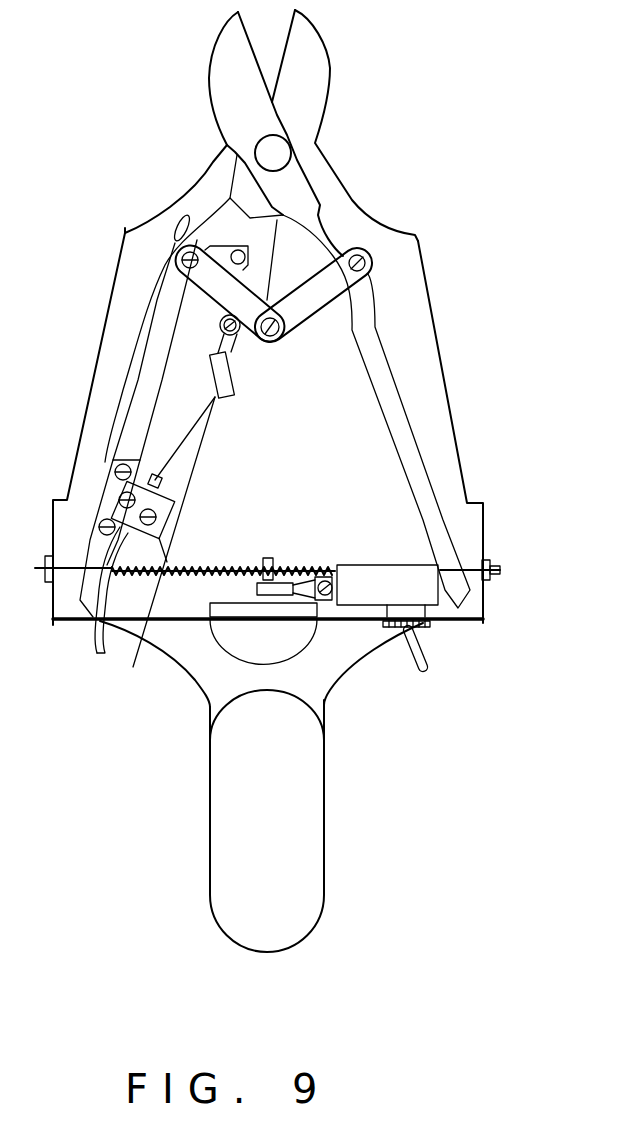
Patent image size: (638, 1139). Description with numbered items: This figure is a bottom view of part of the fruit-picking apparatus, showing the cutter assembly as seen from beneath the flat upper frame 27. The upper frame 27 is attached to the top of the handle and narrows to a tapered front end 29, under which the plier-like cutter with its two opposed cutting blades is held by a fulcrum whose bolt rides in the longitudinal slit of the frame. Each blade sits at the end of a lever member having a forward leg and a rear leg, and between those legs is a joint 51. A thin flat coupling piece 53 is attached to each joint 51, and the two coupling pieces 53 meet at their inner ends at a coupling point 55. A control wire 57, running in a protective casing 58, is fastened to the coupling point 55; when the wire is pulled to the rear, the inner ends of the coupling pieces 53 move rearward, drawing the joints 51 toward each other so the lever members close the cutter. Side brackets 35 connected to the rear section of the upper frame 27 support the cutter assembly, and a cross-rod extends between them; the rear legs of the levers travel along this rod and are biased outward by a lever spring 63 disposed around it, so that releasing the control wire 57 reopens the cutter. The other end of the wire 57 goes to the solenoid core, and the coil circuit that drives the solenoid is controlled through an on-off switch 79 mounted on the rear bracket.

The upper frame 27 is at (437, 387).
The tapered front end 29 is at (352, 200).
The side brackets 35 is at (485, 548).
The joint 51 is at (368, 265).
The coupling piece 53 is at (293, 313).
The coupling point 55 is at (272, 340).
The control wire 57 is at (188, 437).
The protective casing 58 is at (93, 652).
The lever spring 63 is at (207, 568).
The on-off switch 79 is at (433, 663).